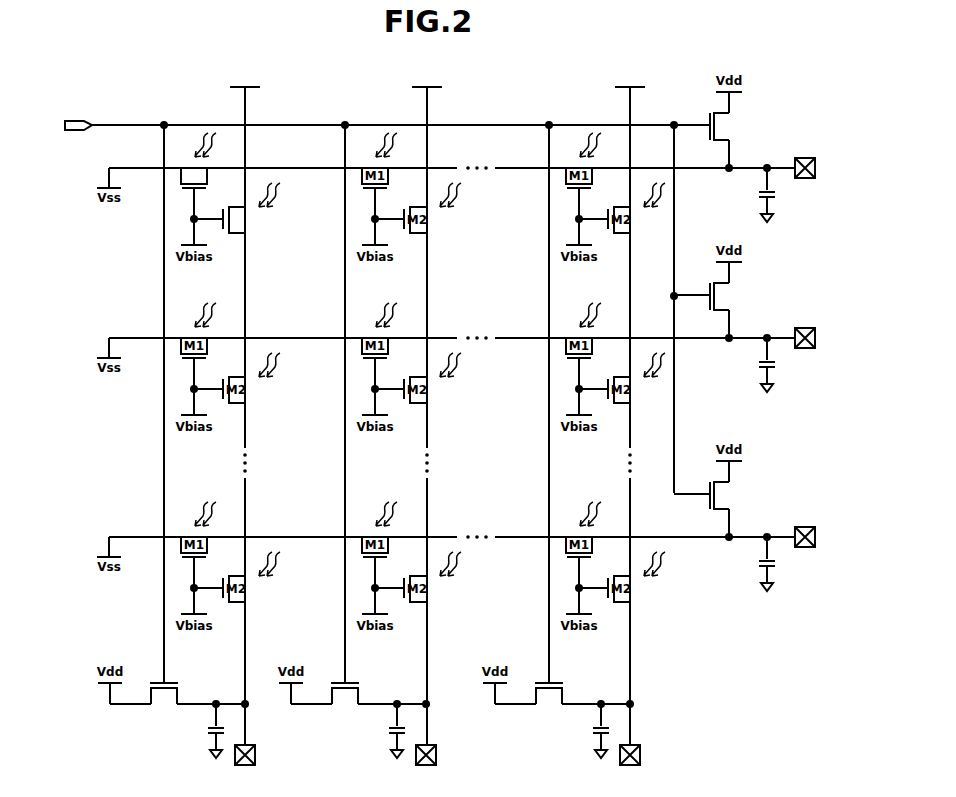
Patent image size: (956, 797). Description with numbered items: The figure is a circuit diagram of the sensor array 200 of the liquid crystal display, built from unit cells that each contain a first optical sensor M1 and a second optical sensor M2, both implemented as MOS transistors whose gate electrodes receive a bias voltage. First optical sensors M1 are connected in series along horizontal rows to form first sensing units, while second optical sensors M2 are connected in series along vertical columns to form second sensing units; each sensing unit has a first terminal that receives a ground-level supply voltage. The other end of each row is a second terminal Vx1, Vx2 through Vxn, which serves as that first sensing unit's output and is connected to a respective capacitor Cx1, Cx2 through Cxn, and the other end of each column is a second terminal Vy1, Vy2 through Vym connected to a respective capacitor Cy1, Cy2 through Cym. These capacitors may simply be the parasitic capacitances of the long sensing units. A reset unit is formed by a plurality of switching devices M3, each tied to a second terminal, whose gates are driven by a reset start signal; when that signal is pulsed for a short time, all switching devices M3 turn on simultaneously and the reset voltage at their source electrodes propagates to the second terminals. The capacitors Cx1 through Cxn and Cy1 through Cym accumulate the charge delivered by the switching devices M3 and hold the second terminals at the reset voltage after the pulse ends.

The sensor array 200 is at (524, 68).
The first optical sensor M1 is at (195, 198).
The second optical sensor M2 is at (237, 208).
The switching device M3 is at (708, 122).
The capacitor Cx1 is at (753, 193).
The capacitor Cx2 is at (753, 363).
The capacitor Cxn is at (752, 562).
The second terminal Vx1 is at (804, 160).
The second terminal Vx2 is at (804, 330).
The second terminal Vxn is at (805, 529).
The capacitor Cy1 is at (201, 729).
The capacitor Cy2 is at (382, 729).
The capacitor Cym is at (584, 729).
The second terminal Vy1 is at (244, 764).
The second terminal Vy2 is at (425, 764).
The second terminal Vym is at (630, 764).